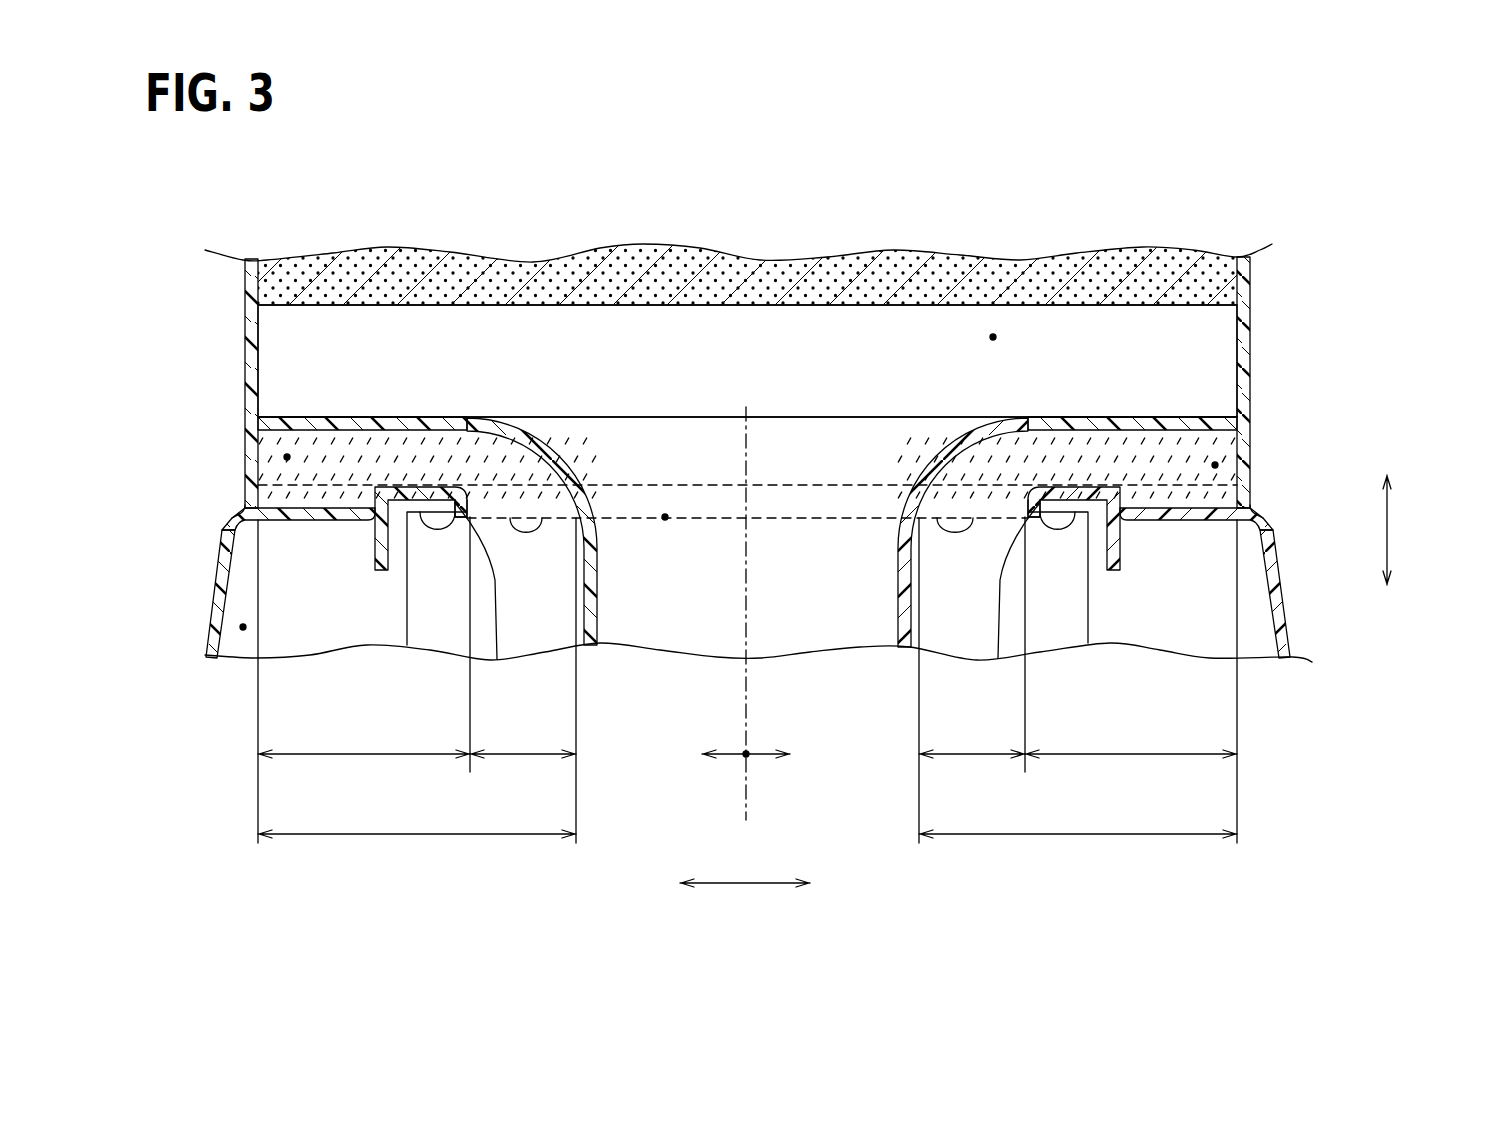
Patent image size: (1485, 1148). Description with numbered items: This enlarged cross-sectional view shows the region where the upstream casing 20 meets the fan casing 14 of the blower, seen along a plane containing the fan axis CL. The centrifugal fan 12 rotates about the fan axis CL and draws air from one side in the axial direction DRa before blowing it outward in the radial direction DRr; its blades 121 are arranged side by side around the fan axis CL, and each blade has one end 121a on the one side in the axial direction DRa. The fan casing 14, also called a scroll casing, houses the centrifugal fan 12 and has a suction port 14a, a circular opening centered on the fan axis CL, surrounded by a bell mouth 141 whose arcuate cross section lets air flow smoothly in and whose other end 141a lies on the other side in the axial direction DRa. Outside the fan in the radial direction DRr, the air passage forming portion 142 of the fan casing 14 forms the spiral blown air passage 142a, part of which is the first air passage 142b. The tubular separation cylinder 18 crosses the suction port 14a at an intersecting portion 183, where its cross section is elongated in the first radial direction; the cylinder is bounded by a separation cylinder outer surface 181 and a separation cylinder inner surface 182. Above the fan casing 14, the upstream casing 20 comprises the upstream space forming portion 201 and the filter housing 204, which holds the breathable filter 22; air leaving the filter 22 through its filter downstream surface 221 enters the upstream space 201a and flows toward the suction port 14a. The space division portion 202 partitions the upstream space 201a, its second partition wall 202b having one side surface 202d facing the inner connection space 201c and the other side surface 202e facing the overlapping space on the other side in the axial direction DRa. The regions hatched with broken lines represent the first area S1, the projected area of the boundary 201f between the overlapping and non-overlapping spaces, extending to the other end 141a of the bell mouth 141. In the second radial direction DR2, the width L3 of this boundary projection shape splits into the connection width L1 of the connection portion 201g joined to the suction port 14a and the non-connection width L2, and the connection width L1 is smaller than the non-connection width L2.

The upstream casing 20 is at (140, 280).
The filter housing 204 is at (234, 276).
The upstream space forming portion 201 is at (233, 360).
The upstream space 201a is at (348, 347).
The inner connection space 201c is at (993, 337).
The boundary 201f is at (282, 456).
The connection portion 201g is at (527, 516).
The space division portion 202 is at (1182, 404).
The second partition wall 202b is at (1112, 415).
The one side surface 202d is at (1133, 415).
The other side surface 202e is at (1237, 433).
The filter downstream surface 221 is at (1193, 305).
The filter 22 is at (1181, 265).
The fan casing 14 is at (195, 553).
The suction port 14a is at (665, 517).
The bell mouth 141 is at (470, 488).
The other end 141a is at (422, 487).
The air passage forming portion 142 is at (201, 589).
The blown air passage 142a is at (252, 582).
The first air passage 142b is at (243, 627).
The centrifugal fan 12 is at (1100, 598).
The blades 121 is at (1070, 617).
The one end 121a is at (1063, 488).
The separation cylinder 18 is at (610, 614).
The intersecting portion 183 is at (577, 483).
The separation cylinder outer surface 181 is at (922, 652).
The separation cylinder inner surface 182 is at (912, 665).
The first area S1 is at (296, 483).
The fan axis CL is at (752, 810).
The radial direction DRr is at (762, 758).
The second radial direction DR2 is at (745, 909).
The axial direction DRa is at (1388, 535).
The connection width L1 is at (524, 752).
The non-connection width L2 is at (366, 752).
The width L3 is at (420, 832).